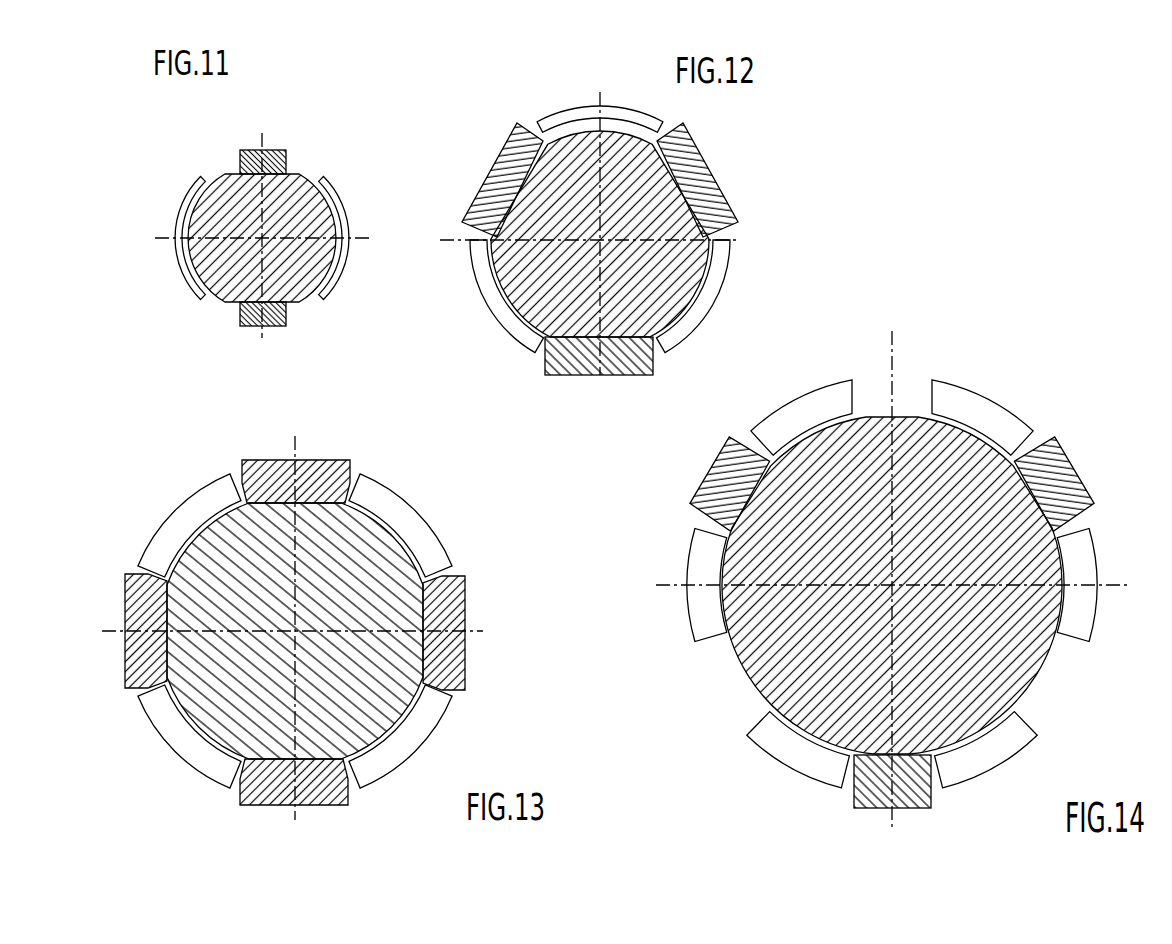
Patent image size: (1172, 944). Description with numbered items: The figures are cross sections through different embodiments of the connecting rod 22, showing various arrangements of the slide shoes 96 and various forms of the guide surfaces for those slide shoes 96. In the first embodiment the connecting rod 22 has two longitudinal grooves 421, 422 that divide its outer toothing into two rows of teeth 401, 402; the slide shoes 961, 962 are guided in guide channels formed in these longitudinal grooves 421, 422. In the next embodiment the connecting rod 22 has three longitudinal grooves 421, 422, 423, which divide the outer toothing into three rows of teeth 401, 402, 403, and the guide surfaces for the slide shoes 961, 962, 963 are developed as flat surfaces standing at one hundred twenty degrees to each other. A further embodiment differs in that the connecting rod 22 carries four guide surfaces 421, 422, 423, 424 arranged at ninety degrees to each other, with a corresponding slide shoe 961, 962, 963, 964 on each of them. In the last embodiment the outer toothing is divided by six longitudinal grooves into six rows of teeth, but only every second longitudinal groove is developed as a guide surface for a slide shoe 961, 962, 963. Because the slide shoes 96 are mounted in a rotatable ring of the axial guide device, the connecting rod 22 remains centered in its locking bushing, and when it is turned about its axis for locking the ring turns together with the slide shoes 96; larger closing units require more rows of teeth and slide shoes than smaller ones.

In FIG. 11, the connecting rod 22 is at (226, 279).
In FIG. 12, the connecting rod 22 is at (518, 323).
In FIG. 13, the connecting rod 22 is at (213, 707).
In FIG. 14, the connecting rod 22 is at (750, 683).
In FIG. 11, the first row of teeth 401 is at (174, 223).
In FIG. 12, the first row of teeth 401 is at (557, 104).
In FIG. 11, the second row of teeth 402 is at (348, 216).
In FIG. 12, the second row of teeth 402 is at (720, 303).
In FIG. 12, the third row of teeth 403 is at (481, 306).
In FIG. 11, the first longitudinal groove 421 is at (229, 171).
In FIG. 12, the first longitudinal groove 421 is at (519, 182).
In FIG. 13, the first longitudinal groove 421 is at (165, 657).
In FIG. 11, the second longitudinal groove 422 is at (300, 307).
In FIG. 12, the second longitudinal groove 422 is at (681, 177).
In FIG. 13, the second longitudinal groove 422 is at (318, 494).
In FIG. 12, the third longitudinal groove 423 is at (587, 376).
In FIG. 13, the third longitudinal groove 423 is at (425, 659).
In FIG. 13, the fourth longitudinal groove 424 is at (323, 768).
In FIG. 11, the slide shoes 96 is at (243, 327).
In FIG. 11, the first slide shoe 961 is at (284, 151).
In FIG. 12, the first slide shoe 961 is at (492, 177).
In FIG. 13, the first slide shoe 961 is at (133, 593).
In FIG. 14, the first slide shoe 961 is at (694, 488).
In FIG. 12, the second slide shoe 962 is at (715, 192).
In FIG. 13, the second slide shoe 962 is at (262, 473).
In FIG. 14, the second slide shoe 962 is at (1065, 475).
In FIG. 12, the third slide shoe 963 is at (643, 376).
In FIG. 13, the third slide shoe 963 is at (460, 595).
In FIG. 14, the third slide shoe 963 is at (872, 795).
In FIG. 13, the fourth slide shoe 964 is at (258, 794).